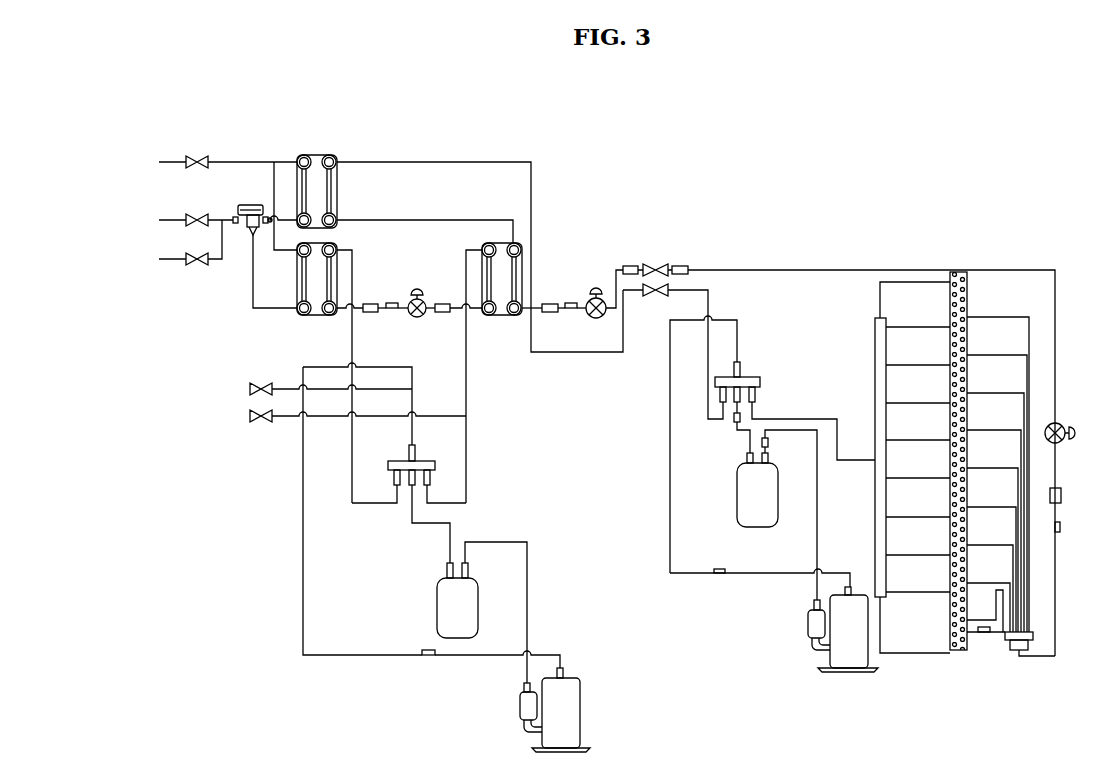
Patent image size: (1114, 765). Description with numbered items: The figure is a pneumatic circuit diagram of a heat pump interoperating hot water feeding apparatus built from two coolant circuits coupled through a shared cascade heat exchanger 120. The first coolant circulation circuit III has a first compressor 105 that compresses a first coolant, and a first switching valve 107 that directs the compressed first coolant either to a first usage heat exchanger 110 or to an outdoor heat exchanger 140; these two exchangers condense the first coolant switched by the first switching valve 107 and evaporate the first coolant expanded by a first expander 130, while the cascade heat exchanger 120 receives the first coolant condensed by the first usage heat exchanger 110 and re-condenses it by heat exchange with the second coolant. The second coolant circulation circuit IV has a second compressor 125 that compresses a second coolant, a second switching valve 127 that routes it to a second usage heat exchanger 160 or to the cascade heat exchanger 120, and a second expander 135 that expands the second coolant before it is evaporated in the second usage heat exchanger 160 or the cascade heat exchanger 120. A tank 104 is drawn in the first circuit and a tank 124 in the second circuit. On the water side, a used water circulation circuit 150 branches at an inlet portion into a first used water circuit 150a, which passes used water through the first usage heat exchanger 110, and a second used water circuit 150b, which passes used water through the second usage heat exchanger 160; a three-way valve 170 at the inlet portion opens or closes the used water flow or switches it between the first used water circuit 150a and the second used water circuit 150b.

The used water circulation circuit 150 is at (226, 162).
The first used water circuit 150a is at (284, 218).
The second used water circuit 150b is at (250, 296).
The first usage heat exchanger 110 is at (316, 155).
The second usage heat exchanger 160 is at (300, 318).
The cascade heat exchanger 120 is at (505, 318).
The three-way valve 170 is at (240, 207).
The second expander 135 is at (415, 293).
The first expander 130 is at (596, 292).
The first switching valve 107 is at (757, 377).
The receiver tank 104 is at (737, 508).
The first compressor 105 is at (870, 661).
The outdoor heat exchanger 140 is at (965, 652).
The second switching valve 127 is at (428, 461).
The receiver tank 124 is at (478, 580).
The second compressor 125 is at (578, 678).
The first coolant circulation circuit III is at (742, 574).
The second coolant circulation circuit IV is at (340, 656).